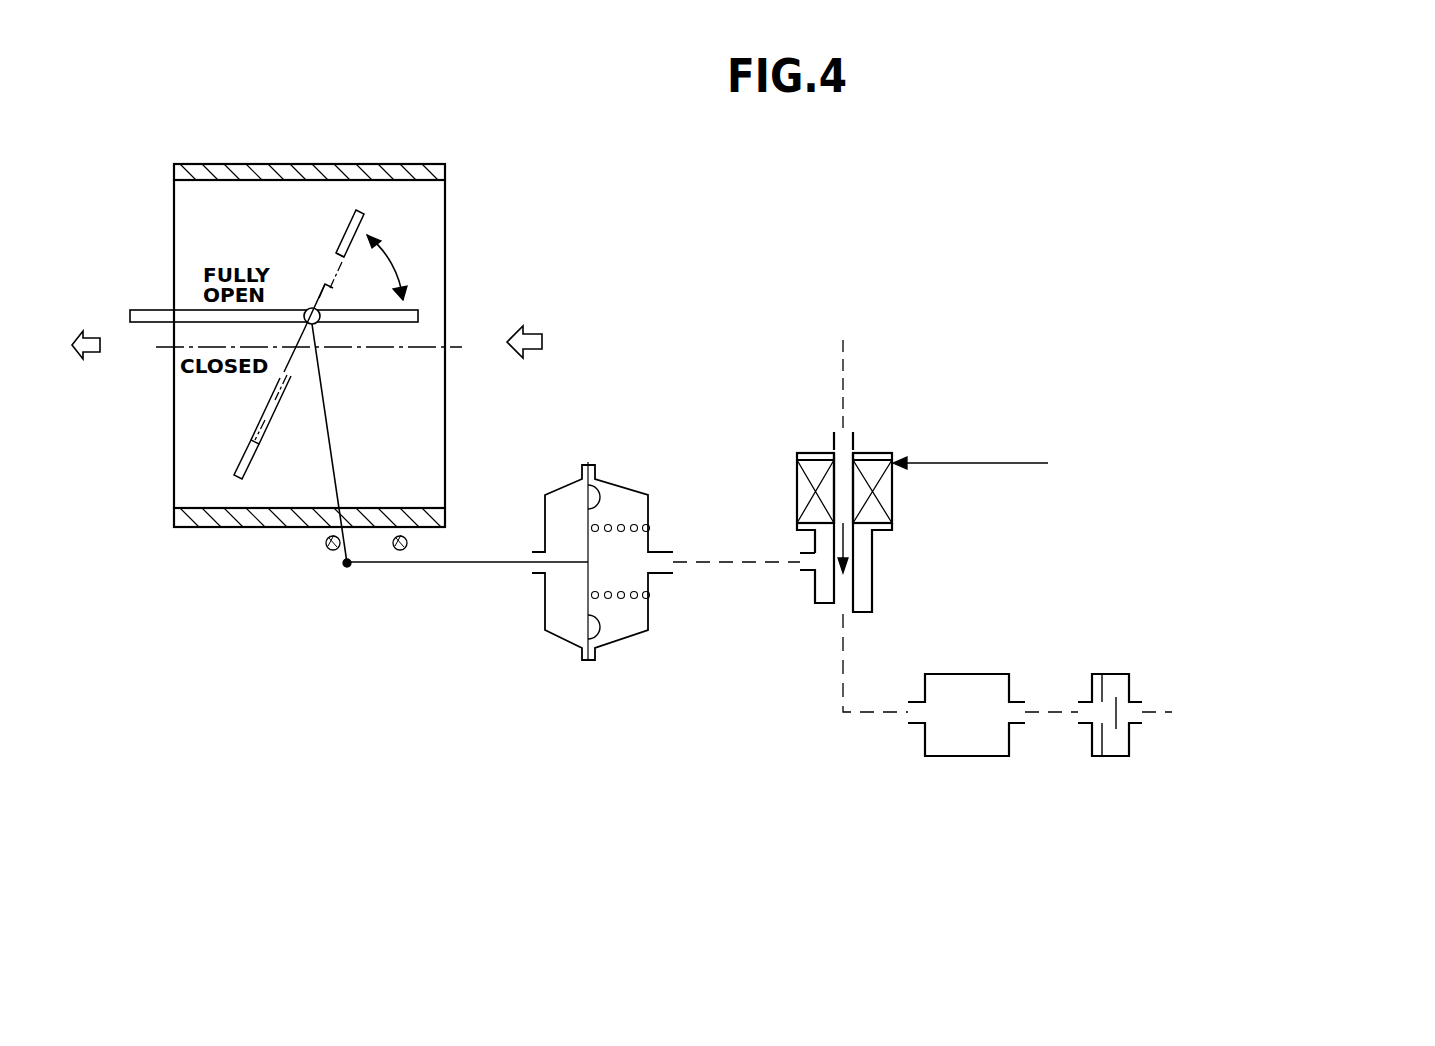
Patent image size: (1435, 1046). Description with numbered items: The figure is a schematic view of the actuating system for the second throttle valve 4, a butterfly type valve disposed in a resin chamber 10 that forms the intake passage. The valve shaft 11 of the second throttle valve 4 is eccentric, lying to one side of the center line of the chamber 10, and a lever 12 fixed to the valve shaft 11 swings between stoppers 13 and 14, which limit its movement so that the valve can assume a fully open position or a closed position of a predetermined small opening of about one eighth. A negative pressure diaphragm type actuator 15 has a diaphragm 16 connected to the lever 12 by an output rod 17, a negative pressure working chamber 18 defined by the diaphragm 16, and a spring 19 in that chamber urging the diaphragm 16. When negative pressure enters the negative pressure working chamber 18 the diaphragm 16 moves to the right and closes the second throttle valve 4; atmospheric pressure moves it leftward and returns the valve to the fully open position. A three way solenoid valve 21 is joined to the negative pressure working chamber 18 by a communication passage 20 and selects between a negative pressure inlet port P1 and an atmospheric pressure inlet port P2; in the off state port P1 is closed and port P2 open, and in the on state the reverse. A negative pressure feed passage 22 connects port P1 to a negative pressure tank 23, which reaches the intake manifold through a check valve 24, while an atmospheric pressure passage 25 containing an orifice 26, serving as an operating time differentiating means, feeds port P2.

The second throttle valve 4 is at (141, 310).
The chamber 10 is at (377, 165).
The valve shaft 11 is at (305, 308).
The lever 12 is at (330, 416).
The stopper 13 is at (328, 550).
The stopper 14 is at (400, 551).
The negative pressure diaphragm type actuator 15 is at (609, 538).
The diaphragm 16 is at (583, 612).
The output rod 17 is at (470, 564).
The negative pressure working chamber 18 is at (632, 503).
The spring 19 is at (615, 600).
The communication passage 20 is at (740, 564).
The three way solenoid valve 21 is at (895, 509).
The negative pressure feed passage 22 is at (843, 690).
The negative pressure tank 23 is at (962, 760).
The check valve 24 is at (1108, 760).
The atmospheric pressure passage 25 is at (840, 388).
The orifice 26 is at (829, 437).
The negative pressure inlet port P1 is at (838, 606).
The atmospheric pressure inlet port P2 is at (843, 450).